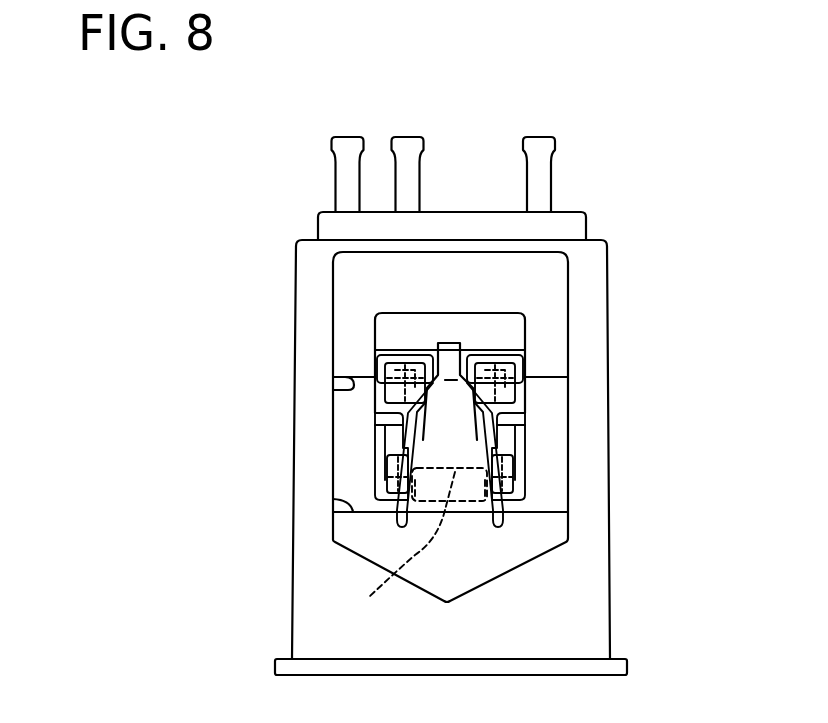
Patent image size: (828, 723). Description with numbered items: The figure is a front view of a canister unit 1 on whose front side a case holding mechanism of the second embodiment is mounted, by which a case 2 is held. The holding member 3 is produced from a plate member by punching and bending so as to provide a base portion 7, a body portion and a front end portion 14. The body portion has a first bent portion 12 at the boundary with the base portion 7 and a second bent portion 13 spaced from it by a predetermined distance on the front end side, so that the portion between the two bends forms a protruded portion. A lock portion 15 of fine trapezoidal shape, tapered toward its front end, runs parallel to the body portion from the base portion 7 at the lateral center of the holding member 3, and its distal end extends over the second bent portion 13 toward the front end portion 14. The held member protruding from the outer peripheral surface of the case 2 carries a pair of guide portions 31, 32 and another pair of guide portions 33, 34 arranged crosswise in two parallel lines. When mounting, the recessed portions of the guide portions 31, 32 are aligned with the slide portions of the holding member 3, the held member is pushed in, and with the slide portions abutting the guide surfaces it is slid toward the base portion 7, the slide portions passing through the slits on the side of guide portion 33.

The electrical connector 1 is at (482, 105).
The case 2 is at (608, 273).
The holding member 3 is at (572, 348).
The base portion 7 is at (500, 557).
The first bent portion 12 is at (335, 493).
The second bent portion 13 is at (335, 388).
The front end portion 14 is at (348, 278).
The lock portion 15 is at (467, 430).
The guide portion 31 is at (500, 410).
The guide portion 32 is at (375, 432).
The guide portion 33 is at (484, 380).
The guide portion 34 is at (418, 545).